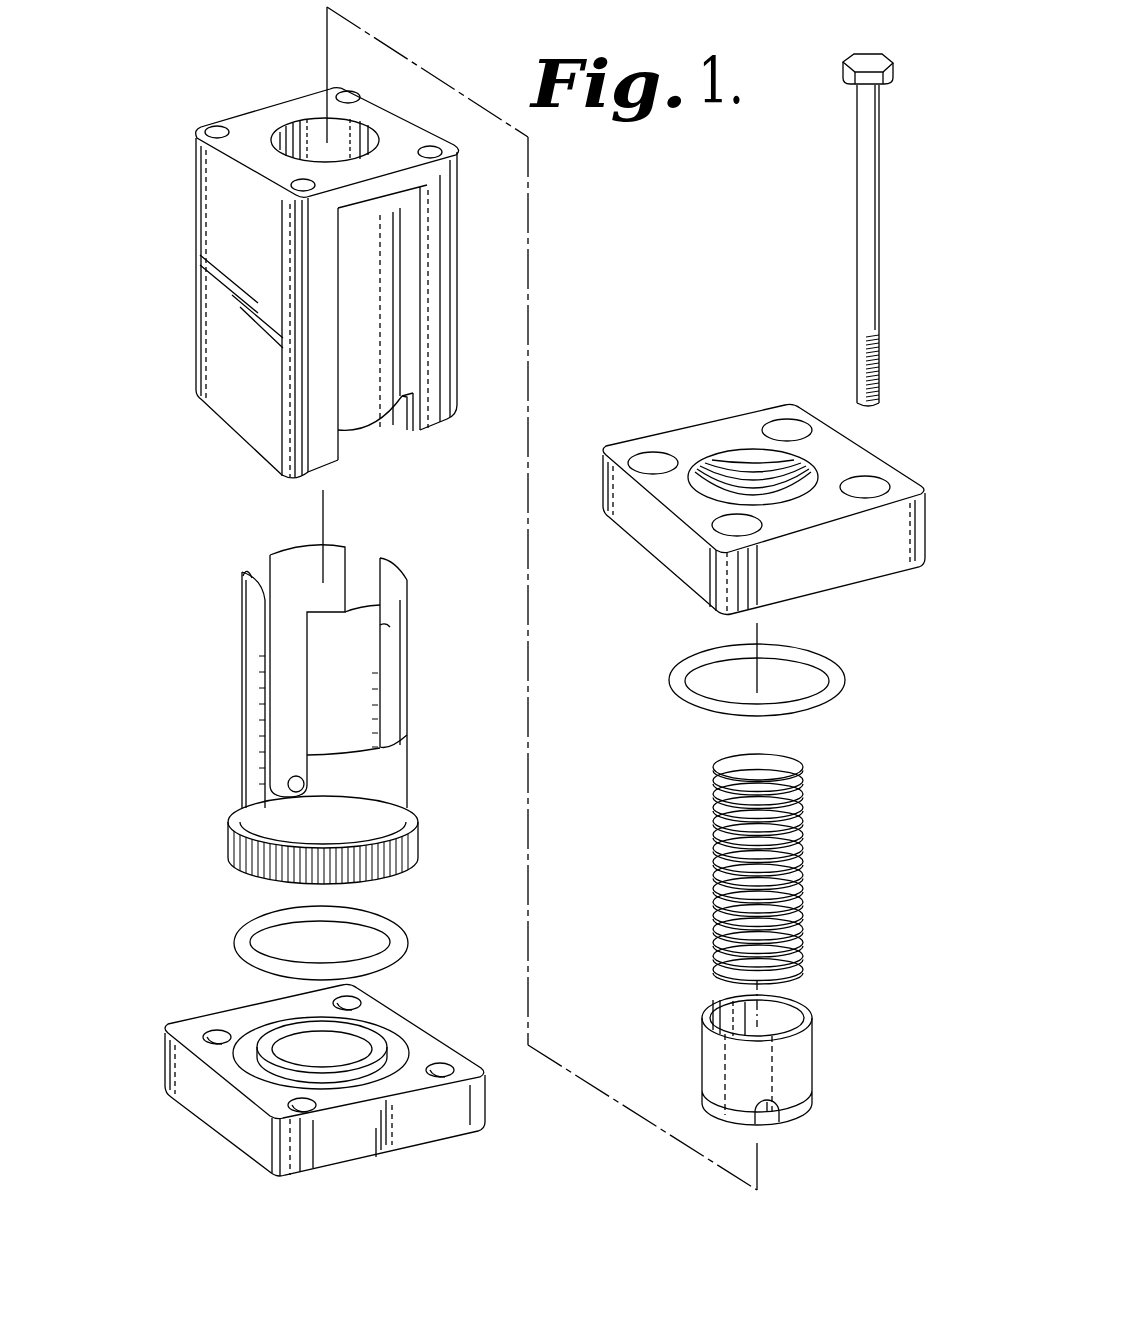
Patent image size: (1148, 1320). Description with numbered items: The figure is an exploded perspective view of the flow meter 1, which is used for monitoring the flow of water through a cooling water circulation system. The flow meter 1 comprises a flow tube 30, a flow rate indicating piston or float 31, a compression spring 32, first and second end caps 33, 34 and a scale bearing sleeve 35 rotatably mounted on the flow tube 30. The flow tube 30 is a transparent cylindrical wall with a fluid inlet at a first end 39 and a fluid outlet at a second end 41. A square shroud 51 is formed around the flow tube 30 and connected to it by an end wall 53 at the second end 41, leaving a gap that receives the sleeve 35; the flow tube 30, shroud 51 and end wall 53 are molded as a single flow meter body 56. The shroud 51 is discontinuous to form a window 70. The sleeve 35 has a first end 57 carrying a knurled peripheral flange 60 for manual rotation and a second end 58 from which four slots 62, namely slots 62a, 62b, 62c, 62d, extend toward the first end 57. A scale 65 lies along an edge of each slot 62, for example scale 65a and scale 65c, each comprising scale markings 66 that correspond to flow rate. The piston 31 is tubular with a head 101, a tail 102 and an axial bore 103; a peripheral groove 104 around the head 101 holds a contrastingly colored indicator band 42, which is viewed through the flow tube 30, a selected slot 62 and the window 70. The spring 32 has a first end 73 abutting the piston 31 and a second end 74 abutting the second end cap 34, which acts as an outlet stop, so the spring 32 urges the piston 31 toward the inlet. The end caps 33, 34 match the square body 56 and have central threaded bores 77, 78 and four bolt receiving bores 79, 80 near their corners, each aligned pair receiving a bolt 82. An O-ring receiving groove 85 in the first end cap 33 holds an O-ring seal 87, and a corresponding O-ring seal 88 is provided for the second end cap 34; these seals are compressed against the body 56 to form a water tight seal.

The flow meter 1 is at (172, 45).
The flow meter body 56 is at (181, 119).
The end wall 53 is at (378, 112).
The second end 41 is at (312, 128).
The shroud 51 is at (445, 238).
The flow tube 30 is at (372, 315).
The first end 39 is at (375, 433).
The window 70 is at (420, 435).
The scale bearing sleeve 35 is at (245, 690).
The scale 65 is at (240, 741).
The second end 58 is at (245, 573).
The scale 65a is at (255, 637).
The scale 65c is at (410, 660).
The slot 62 is at (405, 607).
The slot 62d is at (275, 555).
The slot 62c is at (380, 557).
The slot 62b is at (396, 620).
The slot 62a is at (297, 790).
The scale markings 66 is at (375, 700).
The knurled peripheral flange 60 is at (415, 826).
The first end 57 is at (232, 856).
The O-ring seal 87 is at (230, 942).
The first end cap 33 is at (432, 1140).
The bolt receiving bores 79 is at (217, 1040).
The O-ring receiving groove 85 is at (392, 1045).
The central threaded bore 77 is at (303, 1037).
The bolt 82 is at (857, 193).
The second end cap 34 is at (730, 412).
The bolt receiving bores 80 is at (660, 462).
The central threaded bore 78 is at (805, 470).
The O-ring seal 88 is at (672, 675).
The compression spring 32 is at (800, 858).
The second end 74 is at (798, 772).
The first end 73 is at (800, 955).
The piston 31 is at (812, 1055).
The axial bore 103 is at (790, 1015).
The tail 102 is at (698, 1030).
The head 101 is at (703, 1102).
The indicator band 42 is at (780, 1095).
The peripheral groove 104 is at (770, 1102).